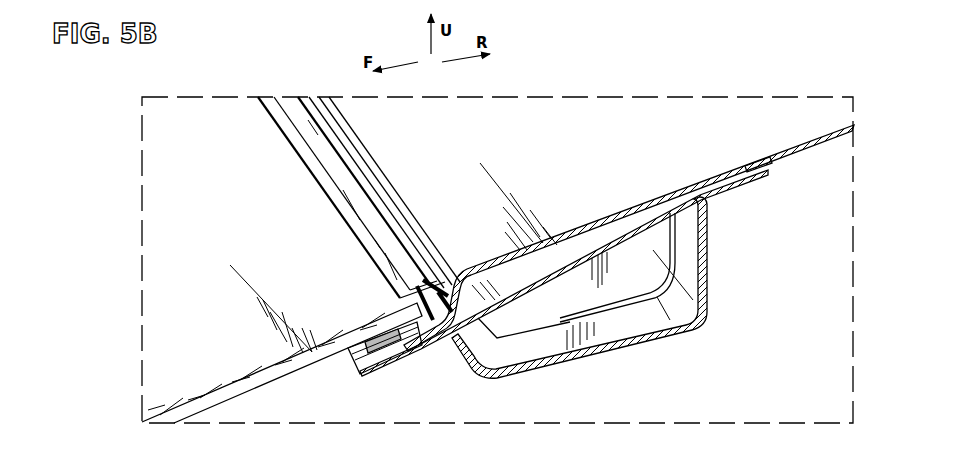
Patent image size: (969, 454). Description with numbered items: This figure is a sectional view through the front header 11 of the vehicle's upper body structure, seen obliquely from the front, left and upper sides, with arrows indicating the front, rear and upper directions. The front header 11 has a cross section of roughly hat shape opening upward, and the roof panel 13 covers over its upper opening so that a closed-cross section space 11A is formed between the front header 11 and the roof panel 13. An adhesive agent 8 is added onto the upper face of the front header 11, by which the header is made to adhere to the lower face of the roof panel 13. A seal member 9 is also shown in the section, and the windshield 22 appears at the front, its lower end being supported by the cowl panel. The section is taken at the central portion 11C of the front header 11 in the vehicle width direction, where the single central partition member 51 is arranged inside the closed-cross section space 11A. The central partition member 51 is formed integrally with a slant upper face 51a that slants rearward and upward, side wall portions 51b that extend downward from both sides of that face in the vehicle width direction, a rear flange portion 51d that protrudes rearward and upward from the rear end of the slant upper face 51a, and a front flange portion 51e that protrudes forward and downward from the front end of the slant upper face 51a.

The adhesive agent 8 is at (741, 170).
The seal member 9 is at (317, 120).
The front header 11 is at (617, 353).
The closed-cross section space 11A is at (522, 353).
The central portion 11C is at (683, 355).
The roof panel 13 is at (525, 114).
The windshield 22 is at (207, 113).
The central partition member 51 is at (683, 238).
The slant upper face 51a is at (600, 232).
The side wall portion 51b is at (652, 251).
The rear flange portion 51d is at (770, 183).
The front flange portion 51e is at (400, 365).